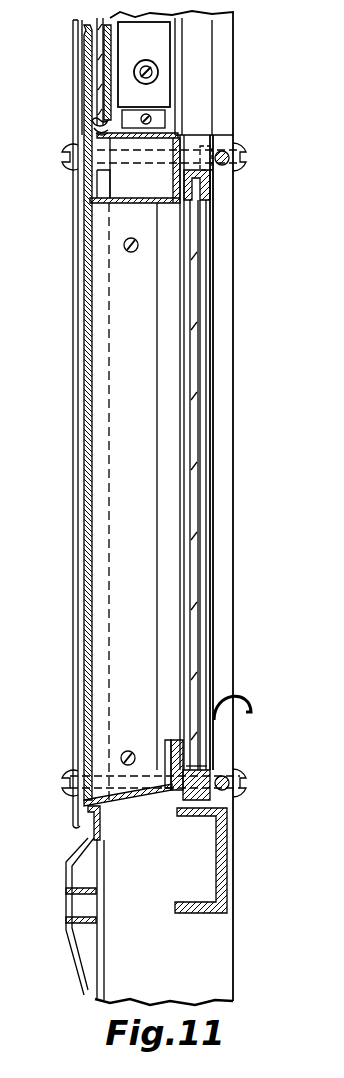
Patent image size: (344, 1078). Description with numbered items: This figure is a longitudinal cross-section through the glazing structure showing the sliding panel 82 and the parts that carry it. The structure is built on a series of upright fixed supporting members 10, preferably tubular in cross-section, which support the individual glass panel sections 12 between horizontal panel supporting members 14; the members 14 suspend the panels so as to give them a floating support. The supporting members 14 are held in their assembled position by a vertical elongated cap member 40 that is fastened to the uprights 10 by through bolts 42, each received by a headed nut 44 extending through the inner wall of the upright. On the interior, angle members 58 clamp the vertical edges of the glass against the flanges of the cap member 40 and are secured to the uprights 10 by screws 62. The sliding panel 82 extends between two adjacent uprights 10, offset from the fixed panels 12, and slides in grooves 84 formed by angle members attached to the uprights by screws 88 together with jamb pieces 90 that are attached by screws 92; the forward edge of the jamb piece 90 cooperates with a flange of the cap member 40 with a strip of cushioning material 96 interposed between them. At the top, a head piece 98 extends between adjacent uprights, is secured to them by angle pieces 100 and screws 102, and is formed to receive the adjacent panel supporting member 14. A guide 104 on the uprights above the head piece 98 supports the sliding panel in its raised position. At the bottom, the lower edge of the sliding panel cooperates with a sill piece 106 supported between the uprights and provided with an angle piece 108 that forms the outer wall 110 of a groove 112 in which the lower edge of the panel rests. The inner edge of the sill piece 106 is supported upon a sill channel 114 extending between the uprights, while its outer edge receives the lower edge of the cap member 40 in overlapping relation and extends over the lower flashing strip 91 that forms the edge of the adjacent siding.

The upright fixed supporting member 10 is at (236, 29).
The panel section 12 is at (96, 80).
The horizontal panel supporting member 14 is at (80, 196).
The cap member 40 is at (72, 532).
The through bolt 42 is at (66, 168).
The headed nut 44 is at (248, 154).
The angle member 58 is at (163, 53).
The screw 62 is at (160, 40).
The sliding panel 82 is at (196, 398).
The groove 84 is at (218, 232).
The screw 88 is at (228, 160).
The jamb piece 90 is at (122, 587).
The lower flashing strip 91 is at (80, 836).
The screw 92 is at (138, 252).
The cushioning material strip 96 is at (86, 453).
The head piece 98 is at (110, 225).
The angle piece 100 is at (160, 124).
The screw 102 is at (150, 118).
The guide 104 is at (200, 78).
The sill piece 106 is at (116, 790).
The angle piece 108 is at (178, 760).
The outer wall 110 is at (168, 745).
The groove 112 is at (215, 768).
The sill channel 114 is at (228, 846).